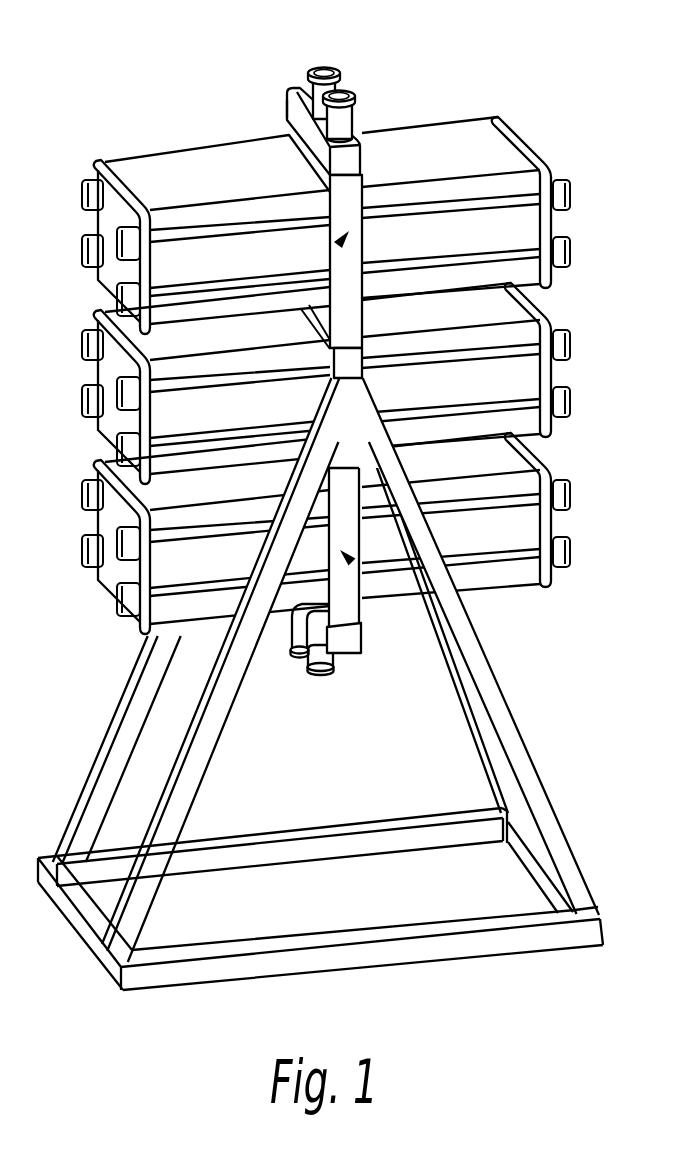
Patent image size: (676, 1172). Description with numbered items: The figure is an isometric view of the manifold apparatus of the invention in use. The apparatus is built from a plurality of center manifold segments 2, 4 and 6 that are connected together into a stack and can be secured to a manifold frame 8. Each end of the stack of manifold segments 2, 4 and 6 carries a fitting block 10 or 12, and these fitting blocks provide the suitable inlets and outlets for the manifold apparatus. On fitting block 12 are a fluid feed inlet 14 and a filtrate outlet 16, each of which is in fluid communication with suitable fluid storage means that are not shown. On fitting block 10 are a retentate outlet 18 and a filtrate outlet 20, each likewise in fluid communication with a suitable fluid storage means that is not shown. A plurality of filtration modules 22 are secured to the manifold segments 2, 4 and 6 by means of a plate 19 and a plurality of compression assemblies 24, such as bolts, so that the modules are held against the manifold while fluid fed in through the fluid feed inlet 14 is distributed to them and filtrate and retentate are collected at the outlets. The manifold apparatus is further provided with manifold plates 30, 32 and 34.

The center manifold segment 2 is at (337, 247).
The center manifold segment 4 is at (367, 331).
The center manifold segment 6 is at (352, 562).
The manifold frame 8 is at (507, 708).
The fitting block 10 is at (348, 155).
The fitting block 12 is at (350, 657).
The fluid feed inlet 14 is at (293, 650).
The filtrate outlet 16 is at (320, 675).
The retentate outlet 18 is at (350, 90).
The plate 19 is at (108, 158).
The filtrate outlet 20 is at (325, 68).
The filtration module 22 is at (176, 254).
The compression assembly 24 is at (82, 193).
The manifold plate 30 is at (287, 120).
The manifold plate 32 is at (320, 318).
The manifold plate 34 is at (343, 538).